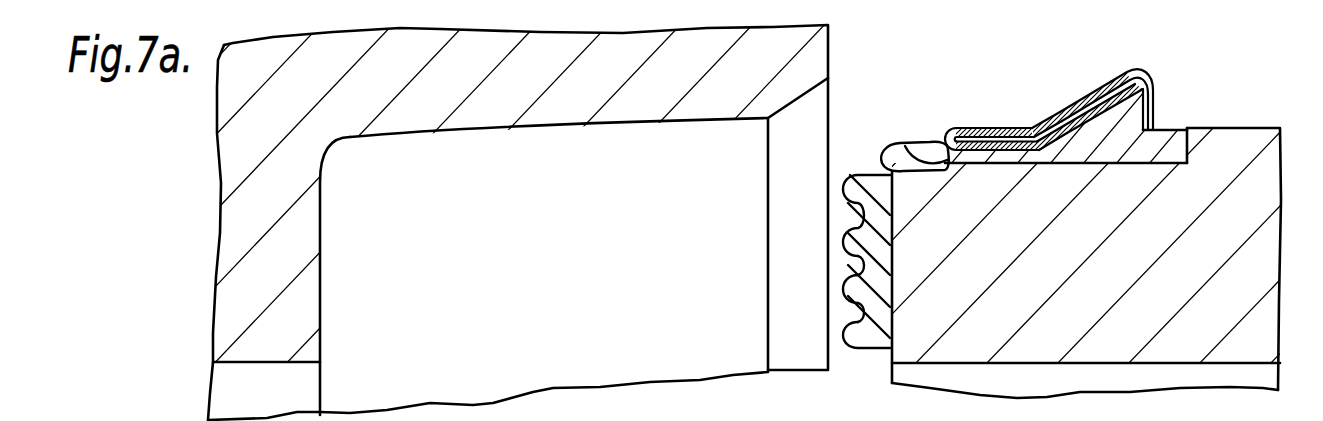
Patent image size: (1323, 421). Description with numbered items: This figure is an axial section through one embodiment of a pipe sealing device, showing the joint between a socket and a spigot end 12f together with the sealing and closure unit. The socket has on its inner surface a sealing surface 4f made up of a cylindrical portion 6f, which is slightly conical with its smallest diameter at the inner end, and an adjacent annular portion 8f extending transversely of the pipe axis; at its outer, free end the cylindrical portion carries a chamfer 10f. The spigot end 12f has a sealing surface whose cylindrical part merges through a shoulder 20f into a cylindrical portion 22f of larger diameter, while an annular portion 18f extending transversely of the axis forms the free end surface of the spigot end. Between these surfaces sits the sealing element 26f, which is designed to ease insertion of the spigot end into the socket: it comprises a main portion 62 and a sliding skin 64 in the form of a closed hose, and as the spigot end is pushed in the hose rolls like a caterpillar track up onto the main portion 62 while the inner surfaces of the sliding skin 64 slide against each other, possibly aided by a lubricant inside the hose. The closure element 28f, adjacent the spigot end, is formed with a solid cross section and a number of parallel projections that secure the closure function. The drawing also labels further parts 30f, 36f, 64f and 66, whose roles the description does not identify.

The sealing surface 4f is at (320, 218).
The cylindrical portion 6f is at (547, 125).
The annular portion 8f is at (320, 340).
The chamfer 10f is at (450, 220).
The spigot end 12f is at (1012, 225).
The annular portion 18f is at (888, 360).
The shoulder 20f is at (1188, 130).
The cylindrical portion 22f is at (1262, 128).
The sealing element 26f is at (1087, 89).
The closure element 28f is at (857, 290).
The sealing lip 30f is at (923, 150).
The hatched seal body 36f is at (1165, 140).
The main portion 62 is at (1111, 122).
The sliding skin 64 is at (998, 126).
The bend of strip 64f is at (1062, 105).
The corrugated bellows seal 66 is at (803, 261).